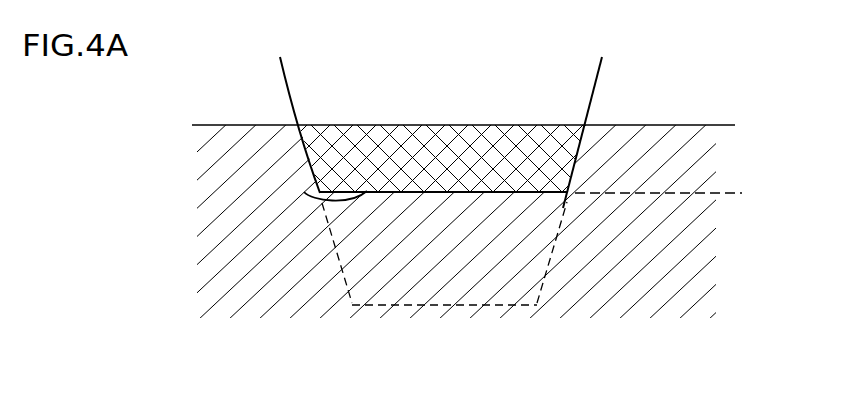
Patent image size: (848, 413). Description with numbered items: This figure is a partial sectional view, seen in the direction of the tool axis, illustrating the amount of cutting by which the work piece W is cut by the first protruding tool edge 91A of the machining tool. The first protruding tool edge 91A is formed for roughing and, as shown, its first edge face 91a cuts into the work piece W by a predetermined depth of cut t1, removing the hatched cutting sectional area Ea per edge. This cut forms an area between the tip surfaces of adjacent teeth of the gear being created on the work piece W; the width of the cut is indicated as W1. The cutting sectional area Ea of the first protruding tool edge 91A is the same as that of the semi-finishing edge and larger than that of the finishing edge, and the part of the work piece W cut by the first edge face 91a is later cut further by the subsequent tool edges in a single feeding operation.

The first protruding tool edge 91A is at (362, 172).
The first edge face 91a is at (330, 201).
The work piece W is at (642, 140).
The cutting sectional area Ea is at (412, 192).
The depth of cut t1 is at (734, 136).
The cut width W1 is at (317, 200).